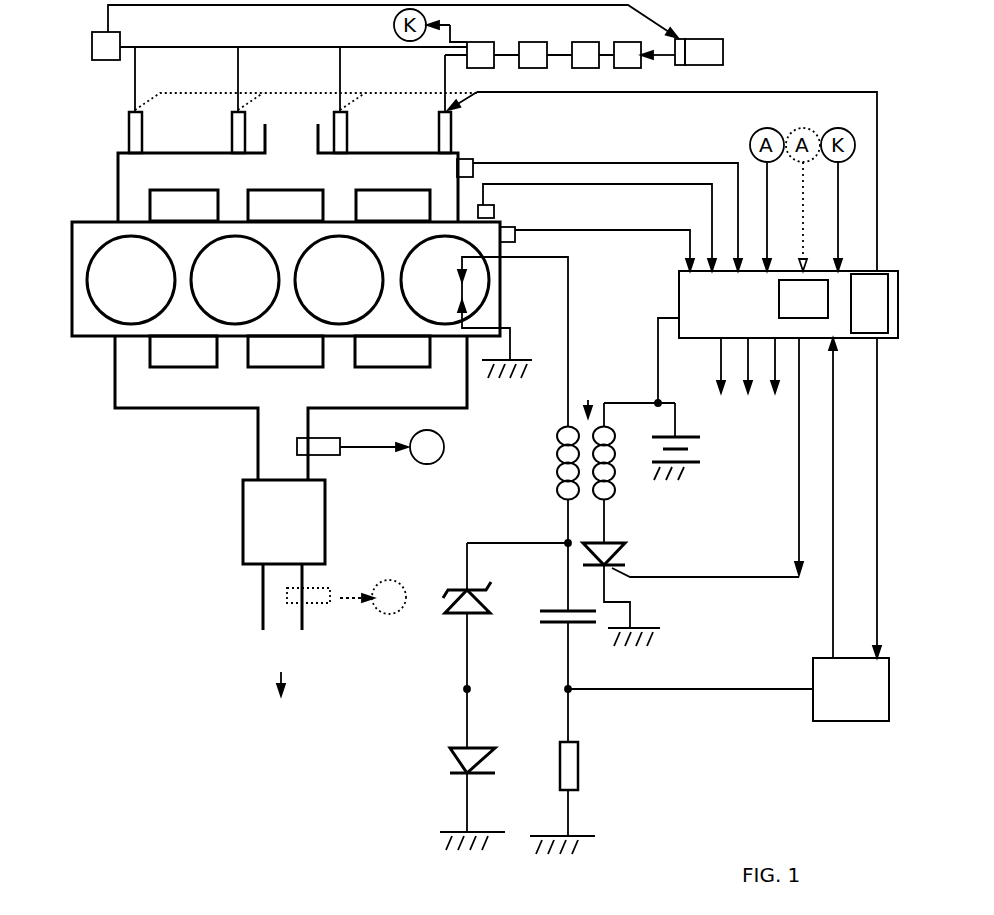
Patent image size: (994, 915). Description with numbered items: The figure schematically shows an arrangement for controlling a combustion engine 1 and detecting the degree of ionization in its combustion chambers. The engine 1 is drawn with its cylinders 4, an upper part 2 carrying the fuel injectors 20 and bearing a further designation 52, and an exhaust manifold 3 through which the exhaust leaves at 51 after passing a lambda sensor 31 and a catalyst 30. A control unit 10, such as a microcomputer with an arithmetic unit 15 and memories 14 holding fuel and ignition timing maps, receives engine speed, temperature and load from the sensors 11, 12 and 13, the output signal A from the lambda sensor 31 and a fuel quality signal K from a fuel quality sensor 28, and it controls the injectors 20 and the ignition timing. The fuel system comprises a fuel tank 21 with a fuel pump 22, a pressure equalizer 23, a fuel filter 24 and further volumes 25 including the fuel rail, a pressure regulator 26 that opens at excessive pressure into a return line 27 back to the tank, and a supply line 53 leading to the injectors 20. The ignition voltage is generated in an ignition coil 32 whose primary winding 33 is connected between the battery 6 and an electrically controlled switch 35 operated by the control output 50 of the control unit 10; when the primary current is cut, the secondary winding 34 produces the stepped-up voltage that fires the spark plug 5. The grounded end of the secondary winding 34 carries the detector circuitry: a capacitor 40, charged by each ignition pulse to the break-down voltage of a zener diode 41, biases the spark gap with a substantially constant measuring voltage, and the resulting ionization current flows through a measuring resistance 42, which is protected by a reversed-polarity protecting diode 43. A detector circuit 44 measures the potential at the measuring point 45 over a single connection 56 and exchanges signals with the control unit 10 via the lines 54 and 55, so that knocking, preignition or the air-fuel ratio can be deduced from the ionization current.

The combustion engine 1 is at (78, 221).
The cylinder head 2 is at (150, 187).
The exhaust manifold 3 is at (130, 390).
The cylinders 4 is at (137, 291).
The spark plug 5 is at (462, 290).
The battery 6 is at (682, 437).
The control unit 10 is at (679, 302).
The engine speed sensor 11 is at (518, 234).
The engine temperature sensor 12 is at (494, 212).
The load sensor 13 is at (474, 166).
The memory 14 is at (883, 305).
The arithmetic unit 15 is at (817, 310).
The fuel injectors 20 is at (235, 130).
The fuel tank 21 is at (695, 58).
The fuel pump 22 is at (681, 40).
The pressure equalizer 23 is at (633, 42).
The fuel filter 24 is at (588, 42).
The fuel volumes 25 is at (535, 42).
The pressure regulator 26 is at (102, 50).
The return line 27 is at (240, 6).
The fuel quality sensor 28 is at (490, 42).
The catalyst 30 is at (287, 521).
The lambda sensor 31 is at (318, 456).
The ignition coil 32 is at (592, 396).
The primary winding 33 is at (614, 486).
The secondary winding 34 is at (557, 460).
The electrically controlled switch 35 is at (627, 553).
The capacitor 40 is at (555, 607).
The zener diode 41 is at (450, 620).
The measuring resistance 42 is at (583, 748).
The diode 43 is at (455, 765).
The detector circuit 44 is at (864, 702).
The measuring point 45 is at (562, 690).
The control output 50 is at (800, 463).
The exhaust gas outlet 51 is at (280, 672).
The ignition system 52 is at (302, 161).
The ignition line 53 is at (718, 94).
The signal line 54 is at (833, 565).
The control line 55 is at (877, 570).
The measuring line 56 is at (800, 688).